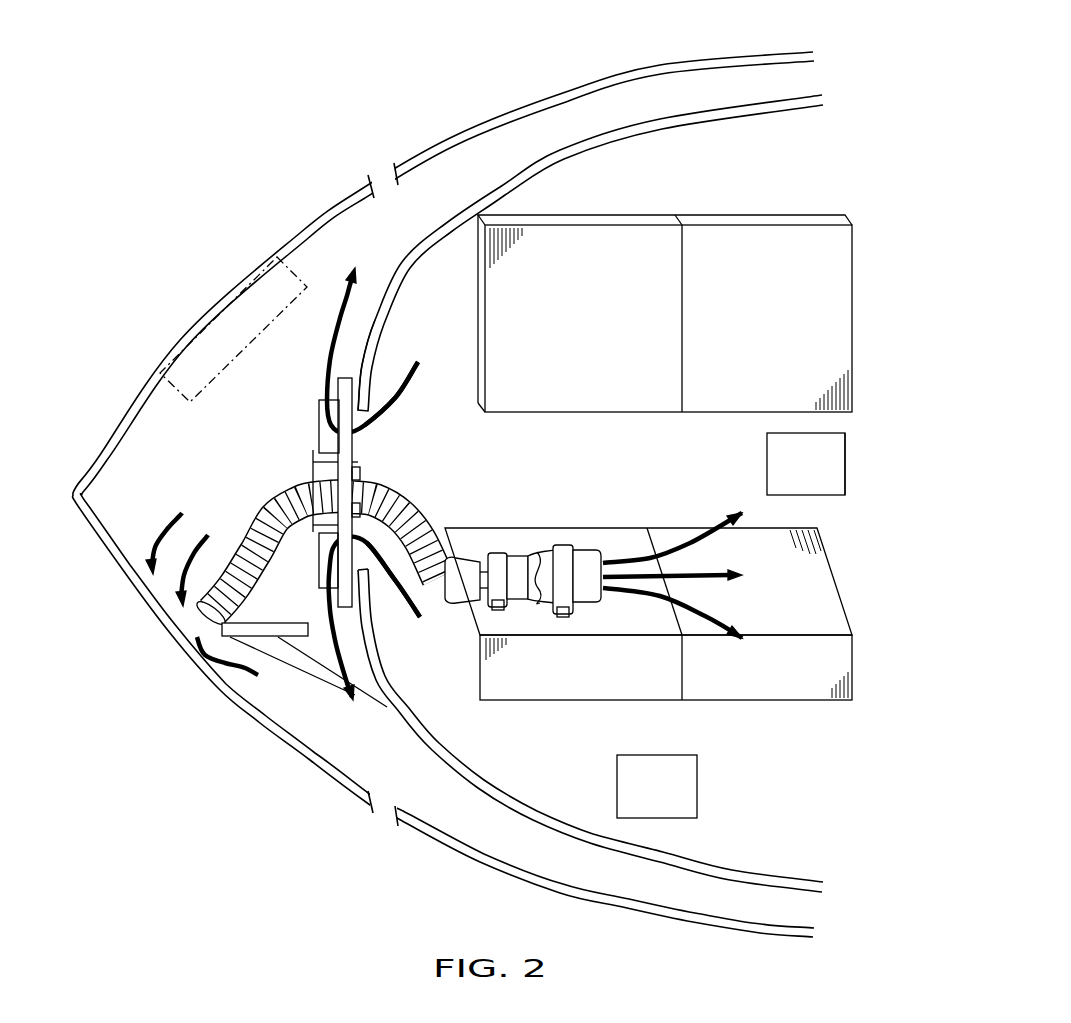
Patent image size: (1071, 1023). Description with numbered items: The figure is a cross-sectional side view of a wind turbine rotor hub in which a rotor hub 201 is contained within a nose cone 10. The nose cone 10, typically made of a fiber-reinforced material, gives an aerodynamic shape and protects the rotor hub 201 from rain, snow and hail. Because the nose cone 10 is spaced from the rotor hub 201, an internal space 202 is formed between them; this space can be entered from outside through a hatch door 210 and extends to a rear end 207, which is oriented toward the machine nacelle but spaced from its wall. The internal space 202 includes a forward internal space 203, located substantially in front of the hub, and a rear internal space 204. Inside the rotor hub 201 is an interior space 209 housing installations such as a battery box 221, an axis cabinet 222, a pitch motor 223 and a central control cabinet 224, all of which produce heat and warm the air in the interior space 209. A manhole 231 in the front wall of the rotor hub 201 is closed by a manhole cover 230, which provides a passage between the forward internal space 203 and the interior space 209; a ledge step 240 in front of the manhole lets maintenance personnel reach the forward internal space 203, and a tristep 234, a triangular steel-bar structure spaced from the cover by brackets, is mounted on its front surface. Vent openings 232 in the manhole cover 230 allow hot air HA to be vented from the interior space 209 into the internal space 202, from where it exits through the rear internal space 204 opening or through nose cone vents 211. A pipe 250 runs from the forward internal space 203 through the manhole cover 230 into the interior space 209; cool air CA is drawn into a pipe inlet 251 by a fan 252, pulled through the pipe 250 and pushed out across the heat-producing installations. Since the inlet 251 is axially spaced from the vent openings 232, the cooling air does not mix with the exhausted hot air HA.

The nose cone 10 is at (602, 86).
The rotor hub 201 is at (730, 108).
The internal space 202 is at (409, 243).
The forward internal space 203 is at (157, 518).
The rear internal space 204 is at (758, 93).
The rear end 207 is at (903, 504).
The interior space 209 is at (608, 480).
The hatch door 210 is at (201, 346).
The nose cone vents 211 is at (380, 172).
The battery box 221 is at (605, 332).
The axis cabinet 222 is at (782, 332).
The pitch motor 223 is at (679, 801).
The central control cabinet 224 is at (828, 478).
The manhole cover 230 is at (355, 458).
The manhole 231 is at (368, 430).
The vent openings 232 is at (320, 420).
The tristep 234 is at (310, 463).
The ledge step 240 is at (228, 632).
The pipe 250 is at (253, 537).
The pipe inlet 251 is at (203, 607).
The fan 252 is at (537, 552).
The hot air HA is at (325, 358).
The cool air CA is at (147, 562).